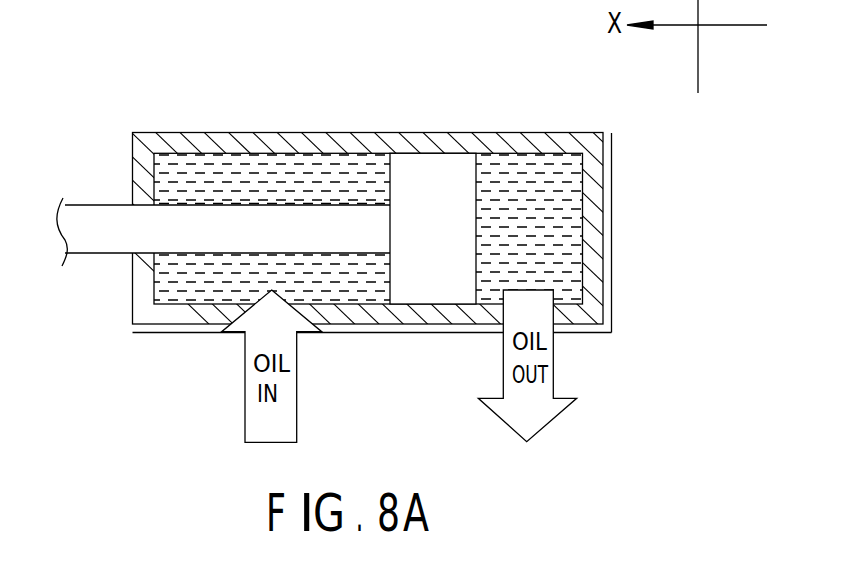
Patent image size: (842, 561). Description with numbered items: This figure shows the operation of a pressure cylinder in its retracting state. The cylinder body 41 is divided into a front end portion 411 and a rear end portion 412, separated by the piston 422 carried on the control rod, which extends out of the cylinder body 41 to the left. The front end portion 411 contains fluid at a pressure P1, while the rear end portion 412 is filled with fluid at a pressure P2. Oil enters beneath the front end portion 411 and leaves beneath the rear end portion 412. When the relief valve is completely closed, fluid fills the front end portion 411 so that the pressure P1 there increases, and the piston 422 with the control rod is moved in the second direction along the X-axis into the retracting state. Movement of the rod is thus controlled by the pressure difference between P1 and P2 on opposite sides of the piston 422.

The cylinder body 41 is at (613, 167).
The front end portion 411 is at (163, 277).
The rear end portion 412 is at (558, 267).
The piston 422 is at (437, 172).
The fluid pressure P1 is at (192, 177).
The fluid pressure P2 is at (520, 195).